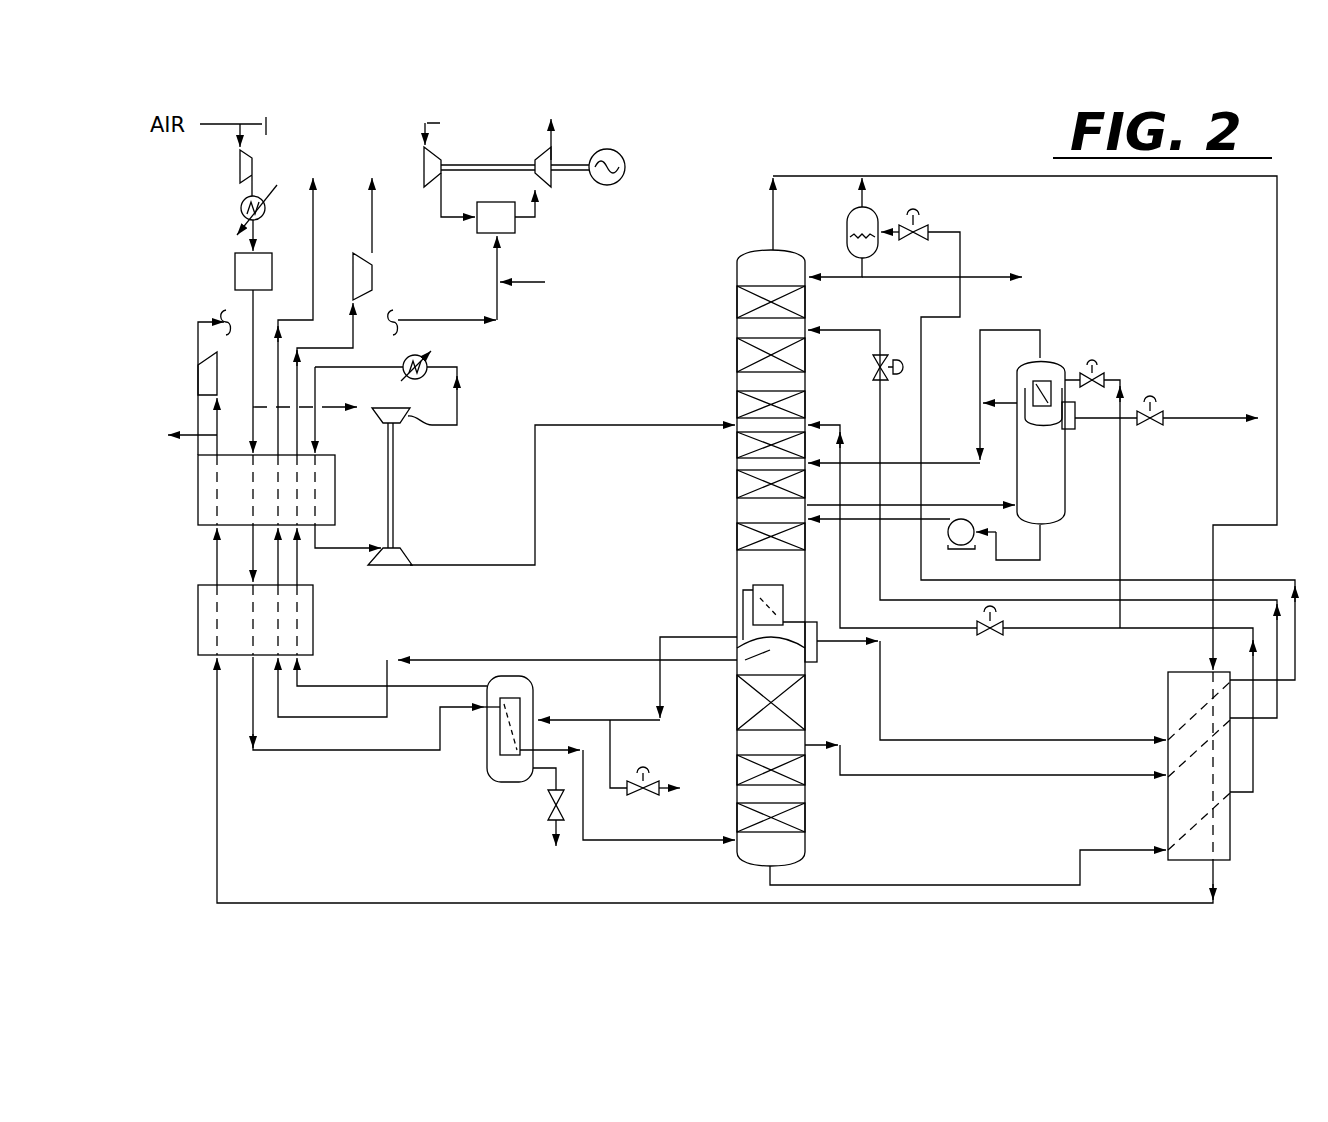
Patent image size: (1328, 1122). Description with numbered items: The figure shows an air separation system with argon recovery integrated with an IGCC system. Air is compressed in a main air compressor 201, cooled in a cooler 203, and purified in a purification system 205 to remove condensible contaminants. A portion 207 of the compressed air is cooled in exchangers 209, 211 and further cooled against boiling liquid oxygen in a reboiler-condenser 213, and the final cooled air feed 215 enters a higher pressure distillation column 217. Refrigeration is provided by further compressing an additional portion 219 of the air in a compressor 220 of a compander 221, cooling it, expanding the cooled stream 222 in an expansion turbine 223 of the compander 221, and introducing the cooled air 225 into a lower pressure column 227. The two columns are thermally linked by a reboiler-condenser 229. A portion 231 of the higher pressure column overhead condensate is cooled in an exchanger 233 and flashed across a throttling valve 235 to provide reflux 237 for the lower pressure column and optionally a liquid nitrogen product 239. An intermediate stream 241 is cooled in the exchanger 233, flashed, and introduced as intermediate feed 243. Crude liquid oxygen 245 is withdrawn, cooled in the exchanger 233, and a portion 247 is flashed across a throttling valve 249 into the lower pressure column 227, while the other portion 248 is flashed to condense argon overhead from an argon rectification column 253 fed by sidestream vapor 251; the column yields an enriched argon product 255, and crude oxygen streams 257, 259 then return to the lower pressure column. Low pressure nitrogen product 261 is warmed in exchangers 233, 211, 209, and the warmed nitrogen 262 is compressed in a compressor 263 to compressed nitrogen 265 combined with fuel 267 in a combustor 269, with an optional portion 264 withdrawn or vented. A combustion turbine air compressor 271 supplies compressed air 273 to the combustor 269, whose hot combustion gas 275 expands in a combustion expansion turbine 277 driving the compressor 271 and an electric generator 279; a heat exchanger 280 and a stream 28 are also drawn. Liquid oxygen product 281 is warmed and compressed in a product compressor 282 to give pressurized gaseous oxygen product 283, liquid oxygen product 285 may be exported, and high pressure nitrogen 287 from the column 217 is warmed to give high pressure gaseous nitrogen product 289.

The main air compressor 201 is at (240, 166).
The cooler 203 is at (241, 208).
The purification system 205 is at (235, 264).
The portion of compressed air 207 is at (250, 310).
The exchanger 209 is at (198, 480).
The exchanger 211 is at (198, 640).
The reboiler-condenser 213 is at (487, 762).
The final cooled air feed 215 is at (636, 845).
The higher pressure distillation column 217 is at (805, 708).
The additional portion of purified compressed air 219 is at (343, 406).
The compressor 220 is at (416, 435).
The compander 221 is at (408, 493).
The cooled stream 222 is at (343, 550).
The expansion turbine 223 is at (407, 558).
The cooled air 225 is at (536, 462).
The lower pressure column 227 is at (737, 352).
The reboiler-condenser 229 is at (762, 585).
The portion of higher pressure column overhead condensate 231 is at (1018, 738).
The exchanger 233 is at (1168, 705).
The throttling valve 235 is at (928, 228).
The reflux 237 is at (836, 270).
The liquid nitrogen product 239 is at (1003, 275).
The intermediate stream 241 is at (1018, 778).
The intermediate feed 243 is at (853, 330).
The crude liquid oxygen 245 is at (976, 884).
The portion of crude liquid oxygen 247 is at (1098, 632).
The other portion of crude liquid oxygen 248 is at (1122, 518).
The throttling valve 249 is at (998, 640).
The sidestream vapor 251 is at (990, 505).
The argon rectification column 253 is at (1066, 510).
The enriched argon product 255 is at (1203, 421).
The crude oxygen stream 257 is at (1040, 355).
The crude oxygen stream 259 is at (1000, 401).
The low pressure nitrogen product 261 is at (1107, 176).
The warmed nitrogen 262 is at (252, 408).
The compressor 263 is at (205, 375).
The portion of nitrogen product 264 is at (200, 440).
The compressed nitrogen 265 is at (462, 322).
The fuel 267 is at (520, 285).
The combustor 269 is at (515, 233).
The combustion turbine air compressor 271 is at (450, 152).
The compressed air 273 is at (455, 222).
The hot combustion gas 275 is at (540, 205).
The combustion expansion turbine 277 is at (555, 138).
The electric generator 279 is at (626, 166).
The heat exchanger 280 is at (386, 395).
The liquid oxygen product 281 is at (660, 637).
The product compressor 282 is at (373, 284).
The high purity pressurized gaseous oxygen product 283 is at (375, 282).
The liquid oxygen product 285 is at (614, 745).
The high pressure nitrogen 287 is at (496, 660).
The high pressure gaseous nitrogen product 289 is at (313, 240).
The liquid oxygen stream 28 is at (573, 720).